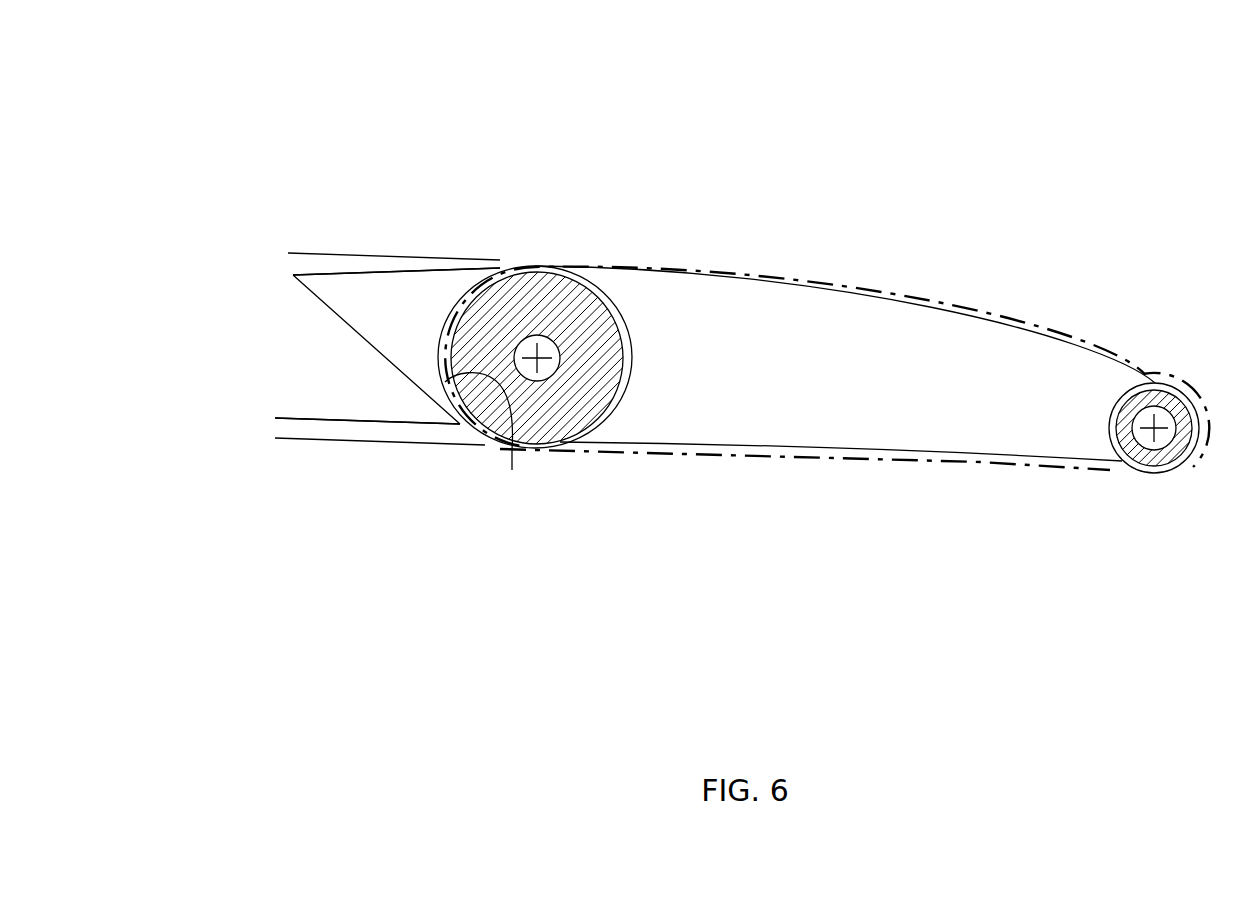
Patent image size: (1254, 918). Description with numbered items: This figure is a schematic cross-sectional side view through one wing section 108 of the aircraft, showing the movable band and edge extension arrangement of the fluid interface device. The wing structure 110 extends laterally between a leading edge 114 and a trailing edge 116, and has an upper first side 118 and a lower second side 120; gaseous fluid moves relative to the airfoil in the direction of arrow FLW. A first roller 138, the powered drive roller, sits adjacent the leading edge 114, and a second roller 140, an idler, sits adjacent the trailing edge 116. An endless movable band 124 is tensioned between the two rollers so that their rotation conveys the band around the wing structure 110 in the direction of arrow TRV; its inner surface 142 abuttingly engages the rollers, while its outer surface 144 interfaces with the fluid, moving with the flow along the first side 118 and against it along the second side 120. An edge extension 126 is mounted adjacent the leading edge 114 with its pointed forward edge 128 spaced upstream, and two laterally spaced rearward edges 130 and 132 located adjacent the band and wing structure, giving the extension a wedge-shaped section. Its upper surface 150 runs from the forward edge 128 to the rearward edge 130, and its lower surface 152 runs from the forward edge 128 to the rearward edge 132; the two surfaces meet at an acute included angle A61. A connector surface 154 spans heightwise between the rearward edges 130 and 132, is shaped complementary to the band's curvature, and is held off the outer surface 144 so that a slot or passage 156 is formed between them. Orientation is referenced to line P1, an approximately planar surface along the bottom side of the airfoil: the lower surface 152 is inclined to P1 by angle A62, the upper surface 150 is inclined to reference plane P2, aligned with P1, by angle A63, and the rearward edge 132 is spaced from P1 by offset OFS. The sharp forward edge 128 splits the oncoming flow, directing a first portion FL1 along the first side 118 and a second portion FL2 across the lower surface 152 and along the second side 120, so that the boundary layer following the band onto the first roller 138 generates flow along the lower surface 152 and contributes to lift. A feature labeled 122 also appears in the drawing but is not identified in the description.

The wing section 108 is at (659, 153).
The wing structure 110 is at (834, 285).
The leading edge 114 is at (448, 357).
The trailing edge 116 is at (1197, 435).
The first side 118 is at (942, 224).
The second side 120 is at (923, 556).
The nozzle outlet 122 is at (493, 208).
The movable band 124 is at (775, 277).
The edge extension 126 is at (341, 447).
The forward edge 128 is at (312, 255).
The rearward edge 130 is at (489, 268).
The rearward edge 132 is at (463, 415).
The first roller 138 is at (551, 417).
The second roller 140 is at (1153, 470).
The inner surface 142 is at (1052, 467).
The outer surface 144 is at (987, 468).
The upper surface 150 is at (340, 268).
The lower surface 152 is at (407, 372).
The connector surface 154 is at (512, 470).
The slot or passage 156 is at (483, 398).
The fluid flow direction FLW is at (410, 78).
The first fluid flow portion FL1 is at (290, 258).
The second fluid flow portion FL2 is at (348, 344).
The band travel direction TRV is at (685, 270).
The planar surface P1 is at (294, 372).
The reference plane P2 is at (295, 253).
The offset OFS is at (293, 478).
The included angle AG1 A61 is at (450, 441).
The angle AG2 A62 is at (367, 345).
The angle AG3 A63 is at (371, 340).